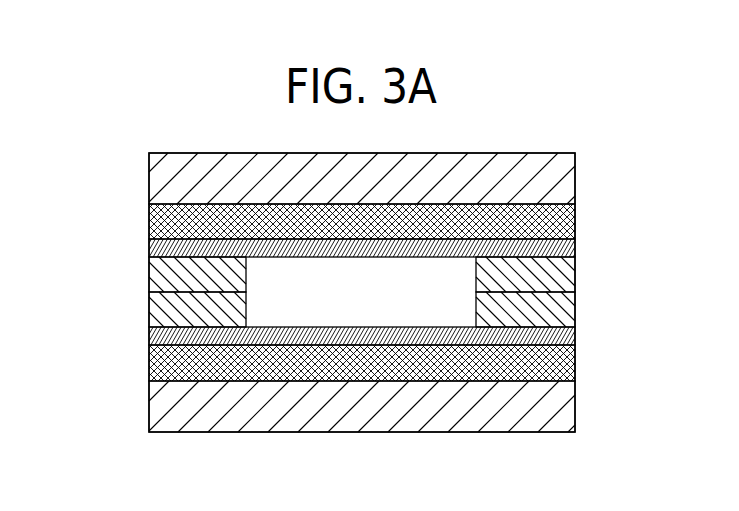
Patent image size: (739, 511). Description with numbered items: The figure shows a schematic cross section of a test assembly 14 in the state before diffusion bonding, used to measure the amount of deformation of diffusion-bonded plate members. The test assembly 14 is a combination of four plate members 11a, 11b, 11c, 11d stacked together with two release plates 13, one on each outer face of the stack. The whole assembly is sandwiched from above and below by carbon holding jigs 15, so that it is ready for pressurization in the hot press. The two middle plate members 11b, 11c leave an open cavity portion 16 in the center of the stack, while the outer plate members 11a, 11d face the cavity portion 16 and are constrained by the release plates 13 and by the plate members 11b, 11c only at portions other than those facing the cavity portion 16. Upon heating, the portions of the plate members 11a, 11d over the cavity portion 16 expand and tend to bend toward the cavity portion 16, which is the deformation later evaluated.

The holding jig 15 is at (149, 173).
The release plate 13 is at (149, 218).
The plate member 11a is at (149, 248).
The plate member 11b is at (149, 282).
The plate member 11c is at (149, 313).
The plate member 11d is at (149, 340).
The test assembly 14 is at (575, 204).
The cavity portion 16 is at (331, 293).